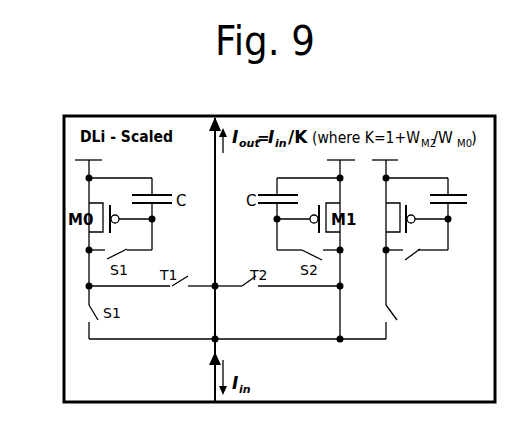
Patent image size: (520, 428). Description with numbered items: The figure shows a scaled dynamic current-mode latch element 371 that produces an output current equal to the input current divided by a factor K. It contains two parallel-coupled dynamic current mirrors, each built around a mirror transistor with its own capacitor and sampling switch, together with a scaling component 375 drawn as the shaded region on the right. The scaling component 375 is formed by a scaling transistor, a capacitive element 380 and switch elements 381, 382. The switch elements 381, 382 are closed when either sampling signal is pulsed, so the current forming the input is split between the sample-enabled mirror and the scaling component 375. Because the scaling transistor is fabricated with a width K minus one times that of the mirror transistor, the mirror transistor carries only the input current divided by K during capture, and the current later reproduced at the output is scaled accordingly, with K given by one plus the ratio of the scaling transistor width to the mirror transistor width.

The scaled dynamic current-mode latch element 371 is at (279, 259).
The scaling component 375 is at (415, 255).
The capacitive element 380 is at (417, 211).
The switch element 381 is at (408, 243).
The switch element 382 is at (382, 313).